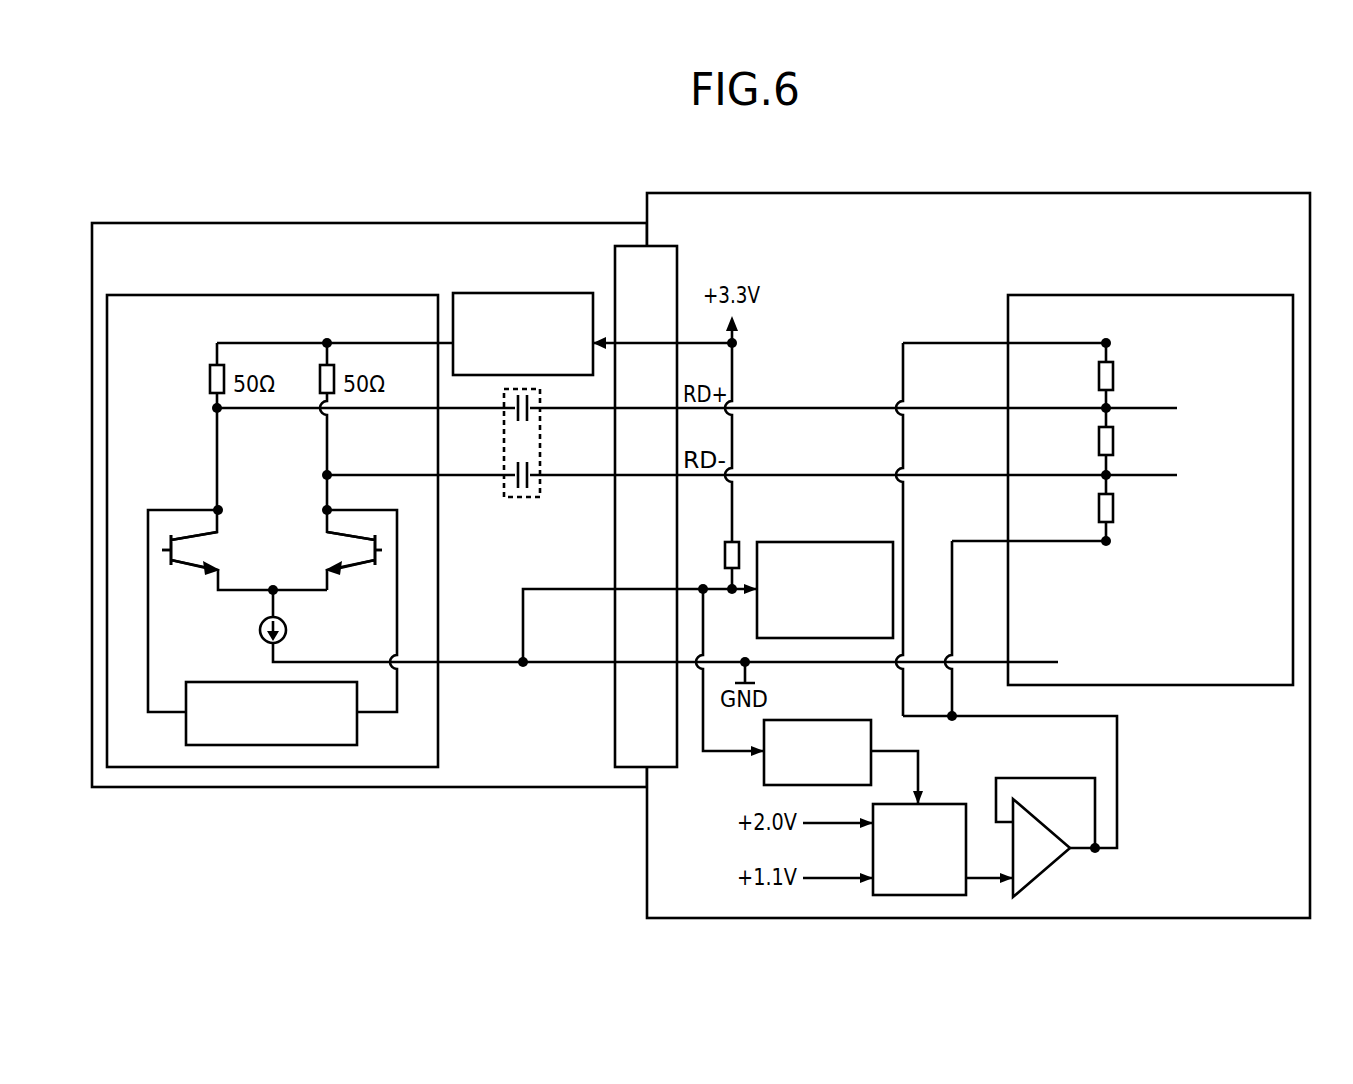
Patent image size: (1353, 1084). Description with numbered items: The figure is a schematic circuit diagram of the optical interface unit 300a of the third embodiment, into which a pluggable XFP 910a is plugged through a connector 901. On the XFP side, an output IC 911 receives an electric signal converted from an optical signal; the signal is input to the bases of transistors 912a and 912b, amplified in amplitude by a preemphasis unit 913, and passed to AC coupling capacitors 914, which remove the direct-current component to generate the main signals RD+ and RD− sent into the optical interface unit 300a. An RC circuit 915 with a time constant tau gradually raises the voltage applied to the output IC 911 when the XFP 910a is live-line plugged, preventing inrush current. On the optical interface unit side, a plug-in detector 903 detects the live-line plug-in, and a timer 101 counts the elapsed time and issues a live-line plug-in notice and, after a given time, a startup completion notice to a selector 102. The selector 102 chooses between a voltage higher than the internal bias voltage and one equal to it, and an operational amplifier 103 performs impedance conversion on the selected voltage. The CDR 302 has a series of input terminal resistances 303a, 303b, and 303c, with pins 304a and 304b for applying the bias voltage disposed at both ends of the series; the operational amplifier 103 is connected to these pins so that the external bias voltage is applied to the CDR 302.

The XFP 910a is at (437, 223).
The optical interface unit 300a is at (1033, 193).
The connector 901 is at (665, 246).
The output IC 911 is at (288, 295).
The RC circuit 915 is at (533, 293).
The CDR 302 is at (1225, 276).
The plug-in detector 903 is at (812, 542).
The timer 101 is at (812, 720).
The selector 102 is at (935, 804).
The operational amplifier 103 is at (1048, 867).
The preemphasis unit 913 is at (357, 733).
The AC coupling capacitors 914 is at (540, 490).
The transistor 912a is at (164, 576).
The transistor 912b is at (382, 576).
The input terminal resistance 303a is at (1116, 442).
The input terminal resistance 303b is at (1116, 377).
The input terminal resistance 303c is at (1116, 512).
The pin 304a is at (1116, 345).
The pin 304b is at (1116, 544).